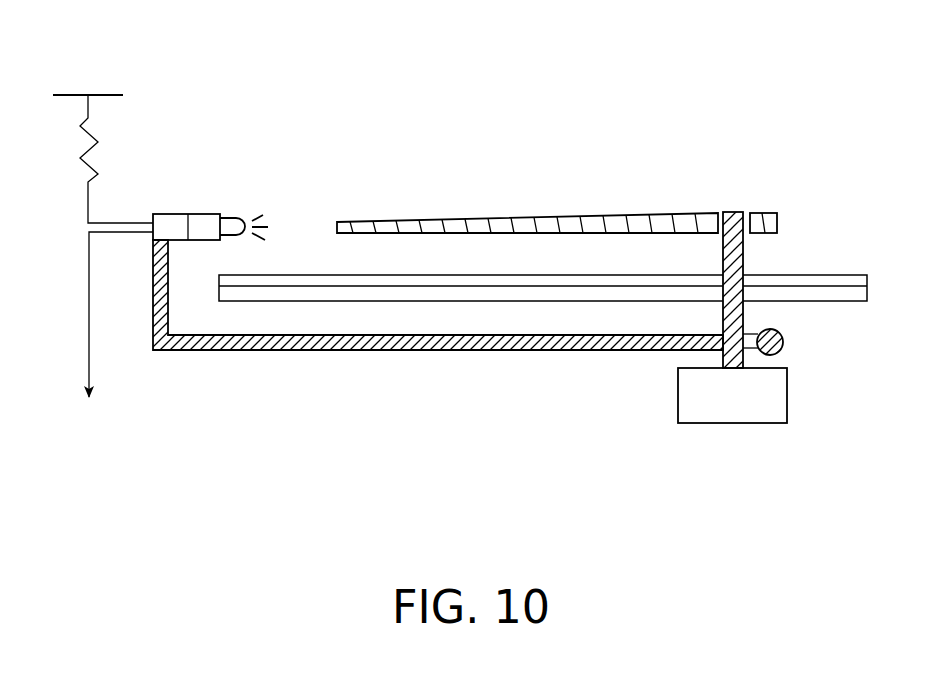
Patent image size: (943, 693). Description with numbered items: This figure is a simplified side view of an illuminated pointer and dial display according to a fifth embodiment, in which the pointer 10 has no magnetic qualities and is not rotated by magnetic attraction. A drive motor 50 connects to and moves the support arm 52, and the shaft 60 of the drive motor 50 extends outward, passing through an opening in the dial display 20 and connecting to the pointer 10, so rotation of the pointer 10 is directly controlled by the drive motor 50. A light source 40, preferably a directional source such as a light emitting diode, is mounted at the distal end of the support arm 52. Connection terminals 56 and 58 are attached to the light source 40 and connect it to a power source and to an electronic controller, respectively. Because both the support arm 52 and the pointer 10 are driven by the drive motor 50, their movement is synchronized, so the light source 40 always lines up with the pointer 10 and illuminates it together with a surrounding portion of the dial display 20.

The pointer 10 is at (477, 214).
The dial display 20 is at (873, 271).
The light source 40 is at (230, 212).
The drive motor 50 is at (672, 422).
The support arm 52 is at (262, 361).
The connection terminal 56 is at (80, 92).
The connection terminal 58 is at (82, 401).
The shaft 60 is at (752, 315).